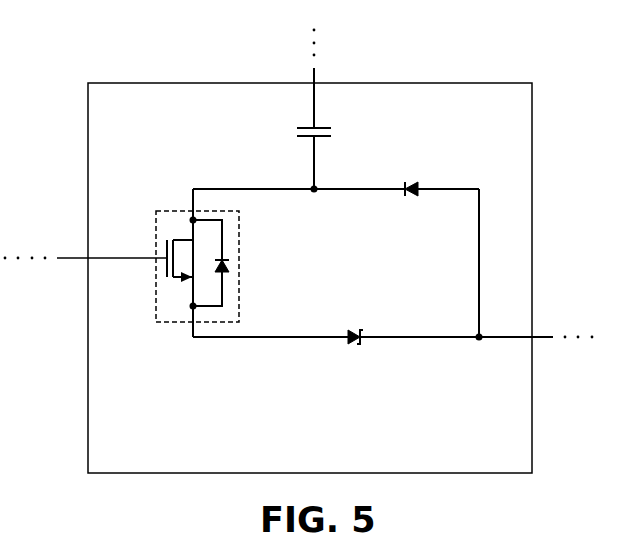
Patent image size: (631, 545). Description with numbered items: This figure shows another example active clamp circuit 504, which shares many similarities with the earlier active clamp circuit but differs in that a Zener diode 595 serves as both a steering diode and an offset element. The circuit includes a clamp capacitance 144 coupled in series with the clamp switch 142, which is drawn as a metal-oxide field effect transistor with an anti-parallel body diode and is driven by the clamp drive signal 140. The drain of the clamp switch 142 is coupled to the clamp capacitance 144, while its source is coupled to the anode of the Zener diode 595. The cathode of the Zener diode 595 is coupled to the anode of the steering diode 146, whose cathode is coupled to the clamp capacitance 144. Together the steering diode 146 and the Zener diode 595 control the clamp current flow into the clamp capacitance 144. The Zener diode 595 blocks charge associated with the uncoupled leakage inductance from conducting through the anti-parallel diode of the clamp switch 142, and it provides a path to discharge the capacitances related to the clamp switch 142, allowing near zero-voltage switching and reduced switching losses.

The active clamp circuit 504 is at (82, 130).
The clamp capacitance C1 144 is at (266, 121).
The steering diode D1 146 is at (433, 168).
The clamp switch 142 is at (167, 328).
The clamp drive signal CD 140 is at (33, 273).
The Zener diode Z2 595 is at (341, 377).